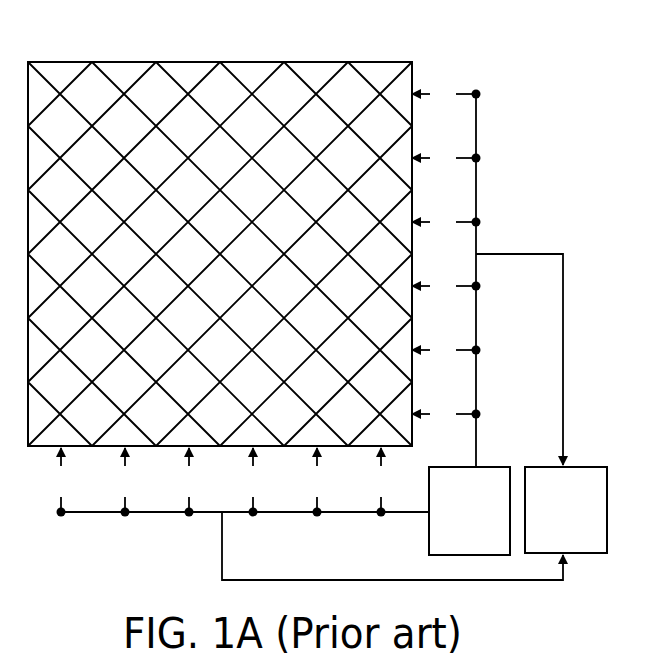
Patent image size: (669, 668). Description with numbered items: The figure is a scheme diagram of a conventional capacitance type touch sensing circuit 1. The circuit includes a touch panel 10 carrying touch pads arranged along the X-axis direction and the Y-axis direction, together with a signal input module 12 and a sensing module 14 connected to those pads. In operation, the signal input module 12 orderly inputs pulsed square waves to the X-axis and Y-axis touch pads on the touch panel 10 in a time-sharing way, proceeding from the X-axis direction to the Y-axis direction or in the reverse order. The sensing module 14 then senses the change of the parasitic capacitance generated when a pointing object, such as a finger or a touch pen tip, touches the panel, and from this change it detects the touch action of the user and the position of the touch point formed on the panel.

The touch sensing circuit 1 is at (526, 60).
The touch panel 10 is at (330, 62).
The signal input module 12 is at (489, 466).
The sensing module 14 is at (584, 466).